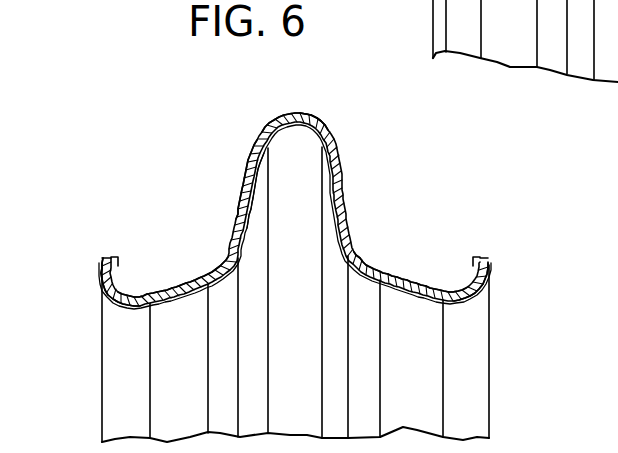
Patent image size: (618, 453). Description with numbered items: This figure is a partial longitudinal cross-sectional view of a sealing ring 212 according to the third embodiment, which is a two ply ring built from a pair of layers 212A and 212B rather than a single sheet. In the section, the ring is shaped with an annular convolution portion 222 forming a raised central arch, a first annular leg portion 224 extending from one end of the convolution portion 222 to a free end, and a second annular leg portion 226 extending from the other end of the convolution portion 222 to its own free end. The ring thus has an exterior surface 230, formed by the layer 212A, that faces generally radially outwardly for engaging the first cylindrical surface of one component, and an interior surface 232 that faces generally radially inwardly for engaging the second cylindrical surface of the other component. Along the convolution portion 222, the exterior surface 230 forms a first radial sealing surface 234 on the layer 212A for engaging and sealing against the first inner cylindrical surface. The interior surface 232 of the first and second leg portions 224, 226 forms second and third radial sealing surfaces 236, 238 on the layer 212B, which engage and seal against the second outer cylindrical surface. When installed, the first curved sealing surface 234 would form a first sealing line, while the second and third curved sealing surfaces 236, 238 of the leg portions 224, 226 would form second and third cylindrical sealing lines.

The sealing ring 212 is at (468, 204).
The layer 212A is at (336, 152).
The layer 212B is at (344, 185).
The annular convolution portion 222 is at (323, 112).
The first annular leg portion 224 is at (233, 207).
The second annular leg portion 226 is at (369, 230).
The exterior surface 230 is at (252, 147).
The interior surface 232 is at (254, 189).
The first radial sealing surface 234 is at (294, 112).
The second radial sealing surface 236 is at (132, 304).
The third radial sealing surface 238 is at (463, 304).